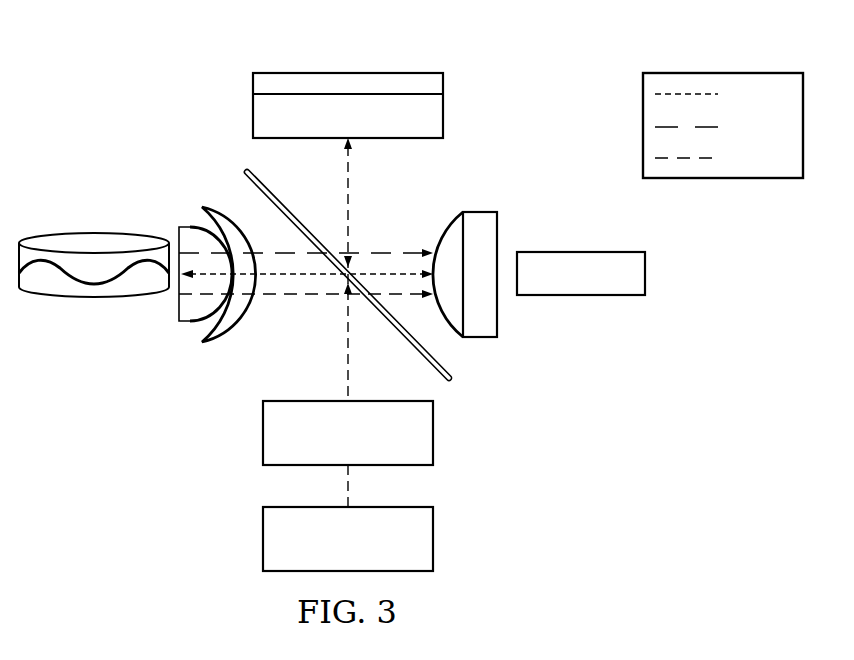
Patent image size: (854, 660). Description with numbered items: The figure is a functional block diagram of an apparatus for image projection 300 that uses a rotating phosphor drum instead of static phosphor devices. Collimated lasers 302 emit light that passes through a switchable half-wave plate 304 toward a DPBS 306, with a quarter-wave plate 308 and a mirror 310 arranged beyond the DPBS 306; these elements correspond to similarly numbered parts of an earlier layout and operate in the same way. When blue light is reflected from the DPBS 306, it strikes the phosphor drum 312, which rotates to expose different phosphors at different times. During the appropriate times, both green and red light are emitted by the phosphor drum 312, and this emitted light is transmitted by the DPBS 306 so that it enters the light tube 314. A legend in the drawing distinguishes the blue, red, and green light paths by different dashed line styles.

The optical system 300 is at (103, 102).
The collimated lasers 302 is at (434, 538).
The switchable half-wave plate 304 is at (434, 432).
The DPBS 306 is at (440, 362).
The quarter-wave plate 308 is at (435, 115).
The mirror 310 is at (262, 82).
The phosphor drum 312 is at (97, 297).
The light tube 314 is at (580, 252).